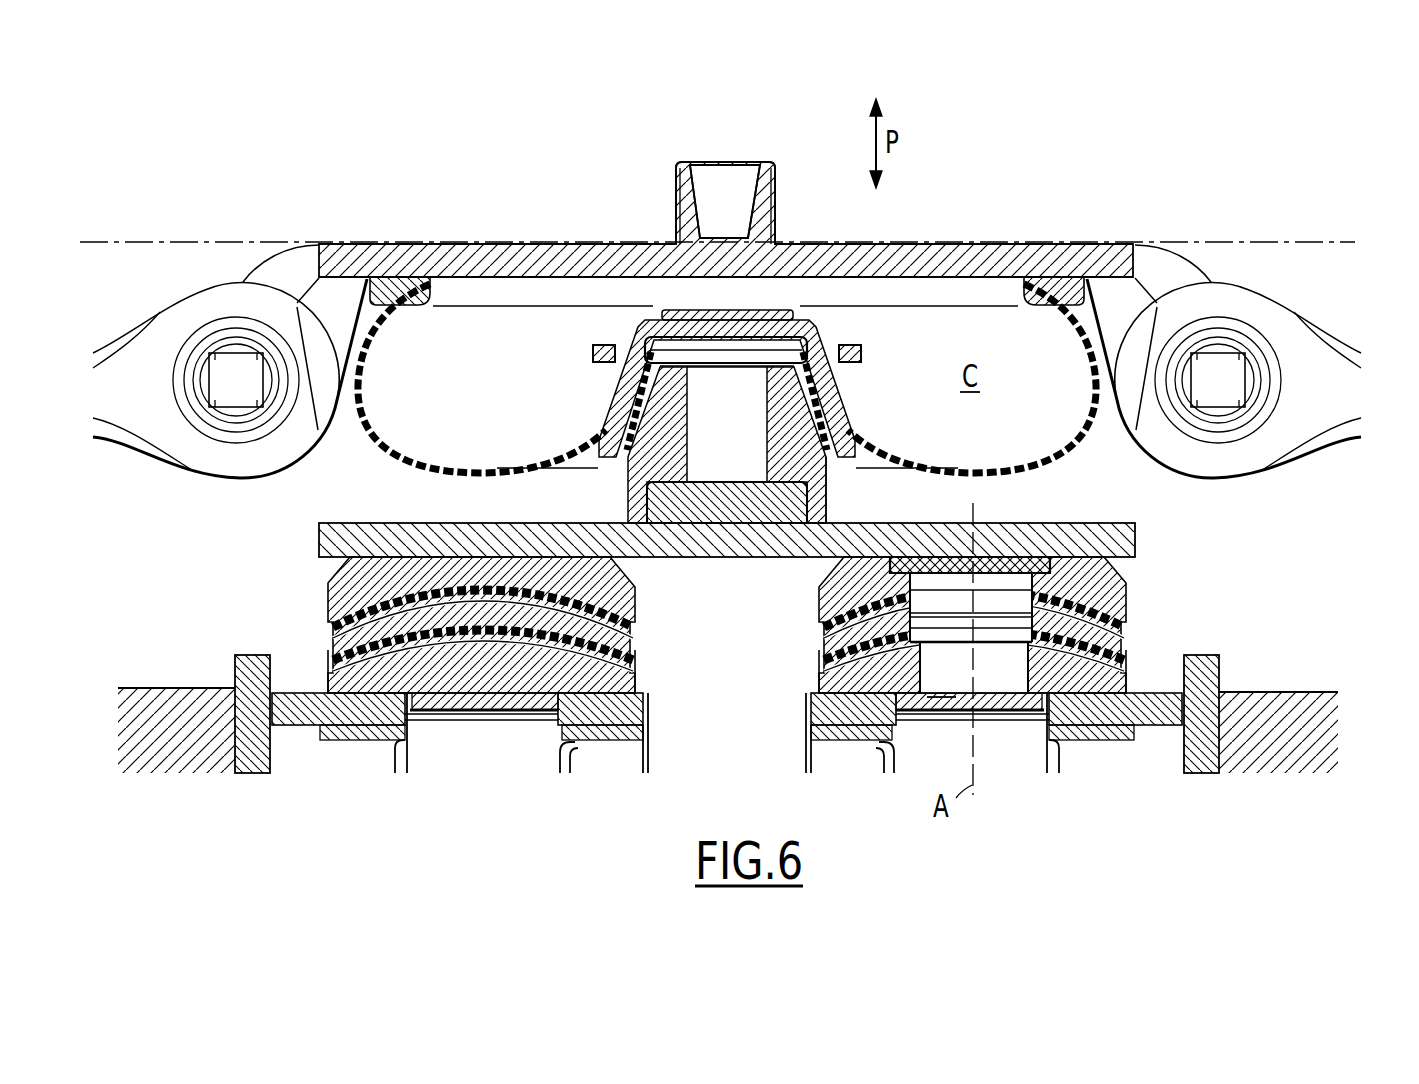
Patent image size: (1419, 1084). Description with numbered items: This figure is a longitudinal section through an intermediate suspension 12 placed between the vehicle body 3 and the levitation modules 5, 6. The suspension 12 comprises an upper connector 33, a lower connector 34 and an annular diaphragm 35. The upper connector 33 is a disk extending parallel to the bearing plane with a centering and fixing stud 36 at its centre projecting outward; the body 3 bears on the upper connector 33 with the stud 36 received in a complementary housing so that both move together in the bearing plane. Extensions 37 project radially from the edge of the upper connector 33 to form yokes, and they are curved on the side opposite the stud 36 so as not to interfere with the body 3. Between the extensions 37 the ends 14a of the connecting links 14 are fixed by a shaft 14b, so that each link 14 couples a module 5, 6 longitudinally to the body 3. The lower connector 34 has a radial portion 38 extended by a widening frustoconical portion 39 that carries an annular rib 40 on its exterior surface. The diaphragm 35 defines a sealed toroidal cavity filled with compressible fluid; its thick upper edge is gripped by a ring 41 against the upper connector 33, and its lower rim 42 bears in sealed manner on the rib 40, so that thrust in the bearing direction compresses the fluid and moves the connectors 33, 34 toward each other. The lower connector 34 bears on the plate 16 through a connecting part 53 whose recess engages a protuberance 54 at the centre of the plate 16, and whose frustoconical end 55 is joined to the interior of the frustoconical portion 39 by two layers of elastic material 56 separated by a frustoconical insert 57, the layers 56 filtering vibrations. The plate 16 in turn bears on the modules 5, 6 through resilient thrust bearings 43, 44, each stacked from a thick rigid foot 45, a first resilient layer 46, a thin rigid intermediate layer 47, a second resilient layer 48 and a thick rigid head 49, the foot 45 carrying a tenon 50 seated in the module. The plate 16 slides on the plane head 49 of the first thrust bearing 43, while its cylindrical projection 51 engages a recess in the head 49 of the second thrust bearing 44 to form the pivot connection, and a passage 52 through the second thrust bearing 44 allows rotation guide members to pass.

The body 3 is at (1355, 243).
The module 5 is at (1293, 760).
The module 6 is at (173, 760).
The intermediate suspension 12 is at (986, 244).
The connecting link 14 is at (205, 460).
The end of the connecting link 14a is at (212, 300).
The shaft 14b is at (215, 345).
The plate 16 is at (331, 540).
The upper connector 33 is at (490, 258).
The lower connector 34 is at (647, 336).
The annular diaphragm 35 is at (353, 306).
The centering and fixing stud 36 is at (766, 216).
The extension 37 is at (282, 268).
The radial portion 38 is at (813, 326).
The frustoconical portion 39 is at (840, 393).
The annular rib 40 is at (614, 372).
The ring 41 is at (1060, 292).
The rim 42 is at (603, 344).
The resilient thrust bearing 43 is at (460, 710).
The resilient thrust bearing 44 is at (1105, 707).
The thick rigid foot 45 is at (818, 692).
The first resilient layer 46 is at (818, 665).
The thin rigid intermediate layer 47 is at (818, 640).
The second resilient layer 48 is at (818, 618).
The thick rigid head 49 is at (818, 590).
The tenon 50 is at (514, 703).
The cylindrical projection 51 is at (1030, 572).
The passage 52 is at (971, 637).
The connecting part 53 is at (813, 488).
The protuberance 54 is at (667, 512).
The frustoconical end 55 is at (656, 455).
The layer of elastic material 56 is at (646, 413).
The frustoconical insert 57 is at (857, 425).